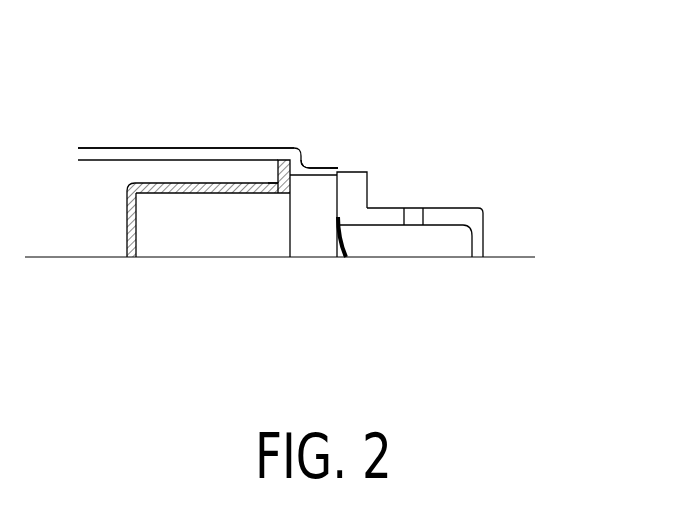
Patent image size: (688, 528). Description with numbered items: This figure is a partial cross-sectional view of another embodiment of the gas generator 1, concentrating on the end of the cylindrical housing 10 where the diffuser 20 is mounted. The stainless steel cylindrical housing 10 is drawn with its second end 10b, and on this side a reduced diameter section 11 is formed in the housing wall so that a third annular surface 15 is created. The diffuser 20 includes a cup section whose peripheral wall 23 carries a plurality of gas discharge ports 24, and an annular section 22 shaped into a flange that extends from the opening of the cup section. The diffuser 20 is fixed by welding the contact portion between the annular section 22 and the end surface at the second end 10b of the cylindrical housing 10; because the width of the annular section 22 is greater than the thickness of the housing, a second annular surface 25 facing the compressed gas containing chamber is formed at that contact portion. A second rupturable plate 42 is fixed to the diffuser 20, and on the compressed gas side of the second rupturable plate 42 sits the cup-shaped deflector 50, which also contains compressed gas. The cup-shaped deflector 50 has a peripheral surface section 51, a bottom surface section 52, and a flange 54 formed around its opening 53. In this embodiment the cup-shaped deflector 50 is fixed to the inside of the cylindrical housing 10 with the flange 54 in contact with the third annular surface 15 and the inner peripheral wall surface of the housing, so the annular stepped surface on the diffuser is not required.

The gas generator 1 is at (108, 146).
The cylindrical housing 10 is at (210, 148).
The second end 10b is at (345, 172).
The reduced diameter section 11 is at (318, 168).
The third annular surface 15 is at (279, 160).
The diffuser 20 is at (437, 191).
The annular section 22 is at (368, 174).
The peripheral wall 23 is at (455, 208).
The gas discharge ports 24 is at (413, 212).
The second annular surface 25 is at (337, 186).
The second rupturable plate 42 is at (339, 237).
The cup-shaped deflector 50 is at (182, 198).
The peripheral surface section 51 is at (148, 183).
The bottom surface section 52 is at (127, 206).
The opening 53 is at (292, 222).
The flange 54 is at (273, 185).